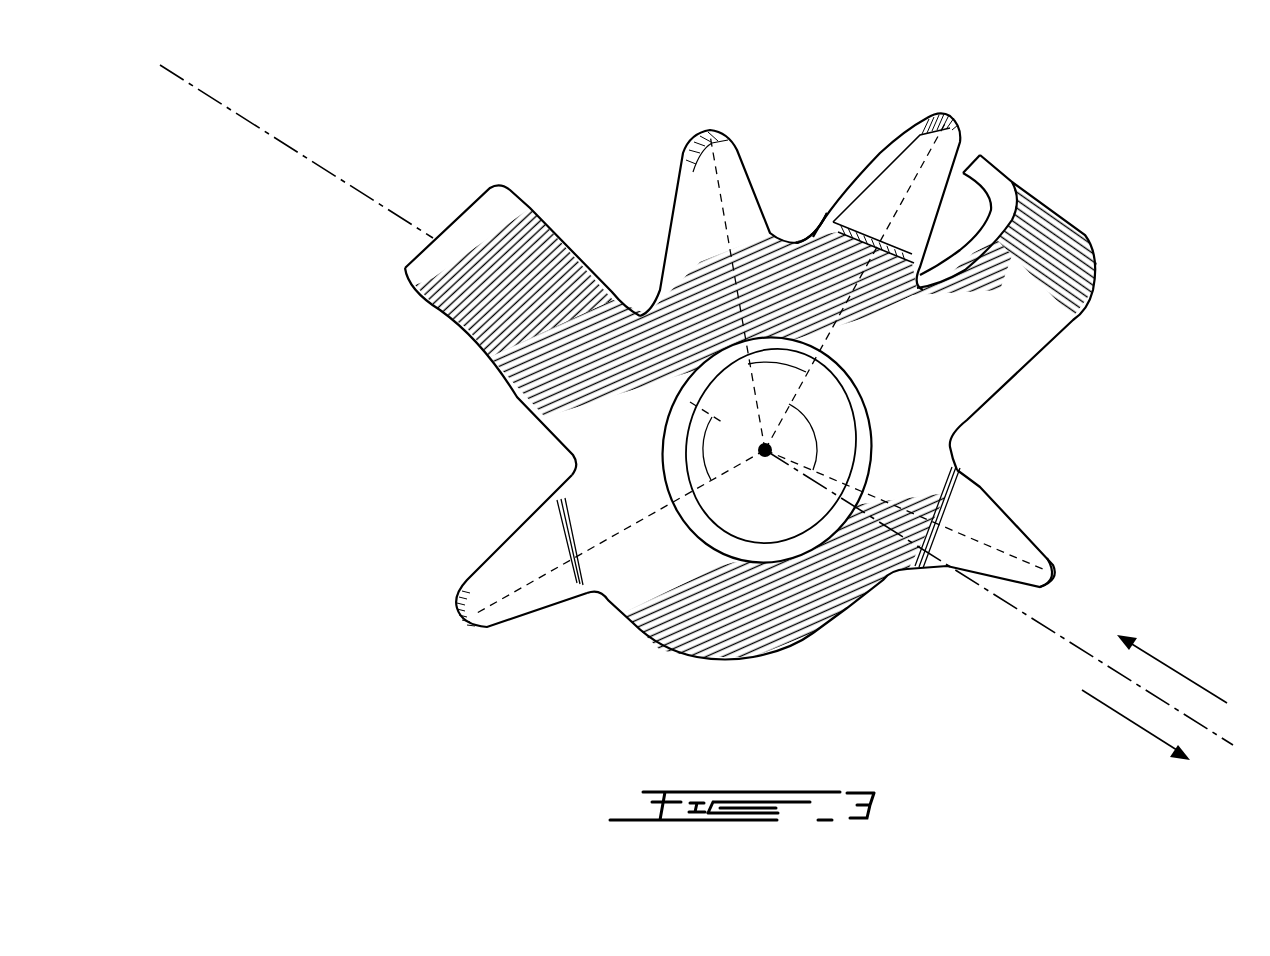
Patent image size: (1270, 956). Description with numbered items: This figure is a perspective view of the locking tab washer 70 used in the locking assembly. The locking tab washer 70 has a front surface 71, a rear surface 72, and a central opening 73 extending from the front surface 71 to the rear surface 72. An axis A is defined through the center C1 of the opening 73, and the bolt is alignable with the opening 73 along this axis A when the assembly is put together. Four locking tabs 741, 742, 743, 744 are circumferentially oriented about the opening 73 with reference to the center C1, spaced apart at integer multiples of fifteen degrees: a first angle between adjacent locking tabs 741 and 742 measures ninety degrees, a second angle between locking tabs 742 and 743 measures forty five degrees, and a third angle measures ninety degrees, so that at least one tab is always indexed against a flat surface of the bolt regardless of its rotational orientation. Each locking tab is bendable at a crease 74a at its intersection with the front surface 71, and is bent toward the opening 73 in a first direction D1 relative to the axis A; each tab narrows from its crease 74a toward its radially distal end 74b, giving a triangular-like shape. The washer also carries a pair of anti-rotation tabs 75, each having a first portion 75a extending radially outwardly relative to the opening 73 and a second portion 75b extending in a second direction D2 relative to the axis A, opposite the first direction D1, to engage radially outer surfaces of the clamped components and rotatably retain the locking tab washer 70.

The locking tab washer 70 is at (386, 468).
The front surface 71 is at (827, 593).
The rear surface 72 is at (803, 227).
The central opening 73 is at (727, 537).
The locking tab 741 is at (566, 538).
The locking tab 742 is at (724, 266).
The locking tab 743 is at (862, 250).
The locking tab 744 is at (951, 517).
The crease 74a is at (975, 487).
The radially distal end 74b is at (1053, 565).
The anti-rotation tab 75 is at (432, 277).
The first portion 75a is at (1007, 313).
The second portion 75b is at (1012, 195).
The center C1 is at (765, 475).
The axis A is at (702, 413).
The first direction D1 is at (1136, 725).
The second direction D2 is at (1172, 669).